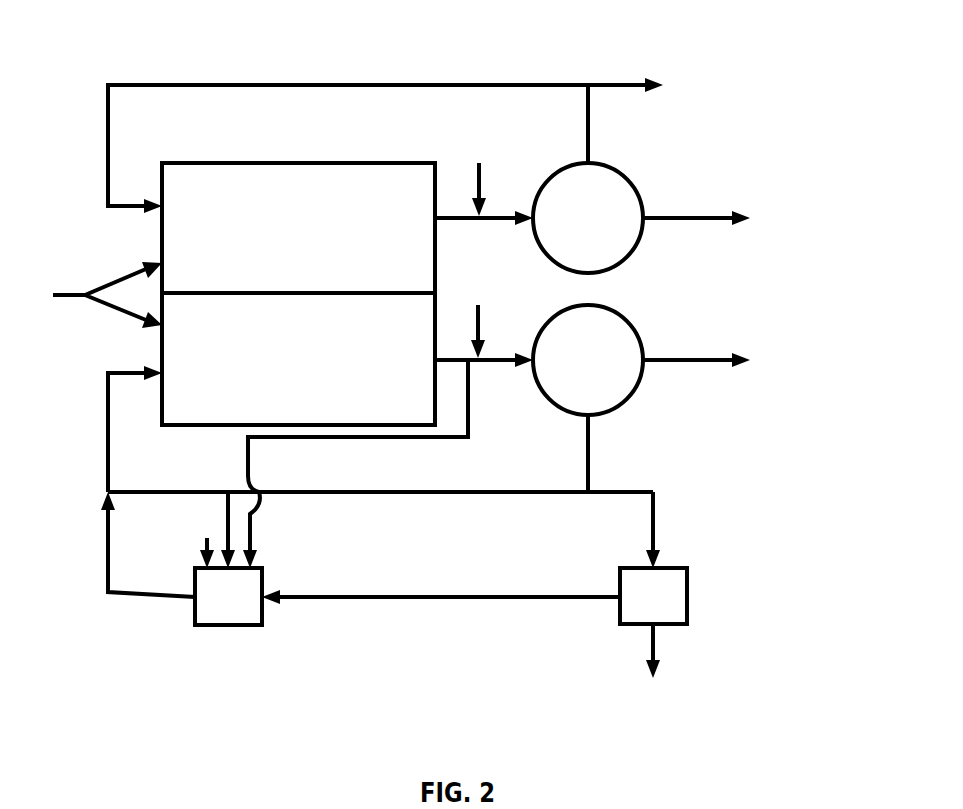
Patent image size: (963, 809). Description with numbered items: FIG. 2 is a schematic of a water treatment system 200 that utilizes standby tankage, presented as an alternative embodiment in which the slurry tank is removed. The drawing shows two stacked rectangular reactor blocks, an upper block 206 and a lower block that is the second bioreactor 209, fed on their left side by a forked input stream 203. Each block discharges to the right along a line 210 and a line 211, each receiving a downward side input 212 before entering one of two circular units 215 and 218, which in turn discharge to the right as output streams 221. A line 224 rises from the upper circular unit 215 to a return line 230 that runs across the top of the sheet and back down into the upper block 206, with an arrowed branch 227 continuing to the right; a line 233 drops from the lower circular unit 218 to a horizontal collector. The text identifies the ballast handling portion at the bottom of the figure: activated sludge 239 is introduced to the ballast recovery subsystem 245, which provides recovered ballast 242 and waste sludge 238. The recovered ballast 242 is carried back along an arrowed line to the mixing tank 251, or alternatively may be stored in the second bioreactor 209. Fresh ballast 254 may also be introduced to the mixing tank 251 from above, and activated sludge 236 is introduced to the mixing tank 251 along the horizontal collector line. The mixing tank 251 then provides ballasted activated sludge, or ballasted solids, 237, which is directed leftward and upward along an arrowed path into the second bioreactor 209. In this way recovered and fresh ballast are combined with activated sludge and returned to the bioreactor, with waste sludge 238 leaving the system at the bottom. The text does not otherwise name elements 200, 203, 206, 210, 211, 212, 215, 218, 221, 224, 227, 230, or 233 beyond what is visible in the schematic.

The system 200 is at (724, 138).
The feed stream 203 is at (115, 280).
The first reactor section 206 is at (300, 249).
The second bioreactor 209 is at (300, 369).
The first product stream 210 is at (458, 222).
The second product stream 211 is at (500, 365).
The quench stream 212 is at (483, 165).
The first separator 215 is at (645, 197).
The second separator 218 is at (630, 318).
The liquid product stream 221 is at (700, 222).
The first gas stream 224 is at (590, 142).
The combined gas stream 227 is at (628, 83).
The recycle gas stream 230 is at (325, 83).
The second gas stream 233 is at (591, 471).
The activated sludge 236 is at (350, 490).
The ballasted activated sludge 237 is at (112, 580).
The waste sludge 238 is at (655, 647).
The activated sludge 239 is at (657, 517).
The recovered ballast 242 is at (338, 595).
The ballast recovery subsystem 245 is at (689, 597).
The mixing tank 251 is at (238, 625).
The fresh ballast 254 is at (203, 545).